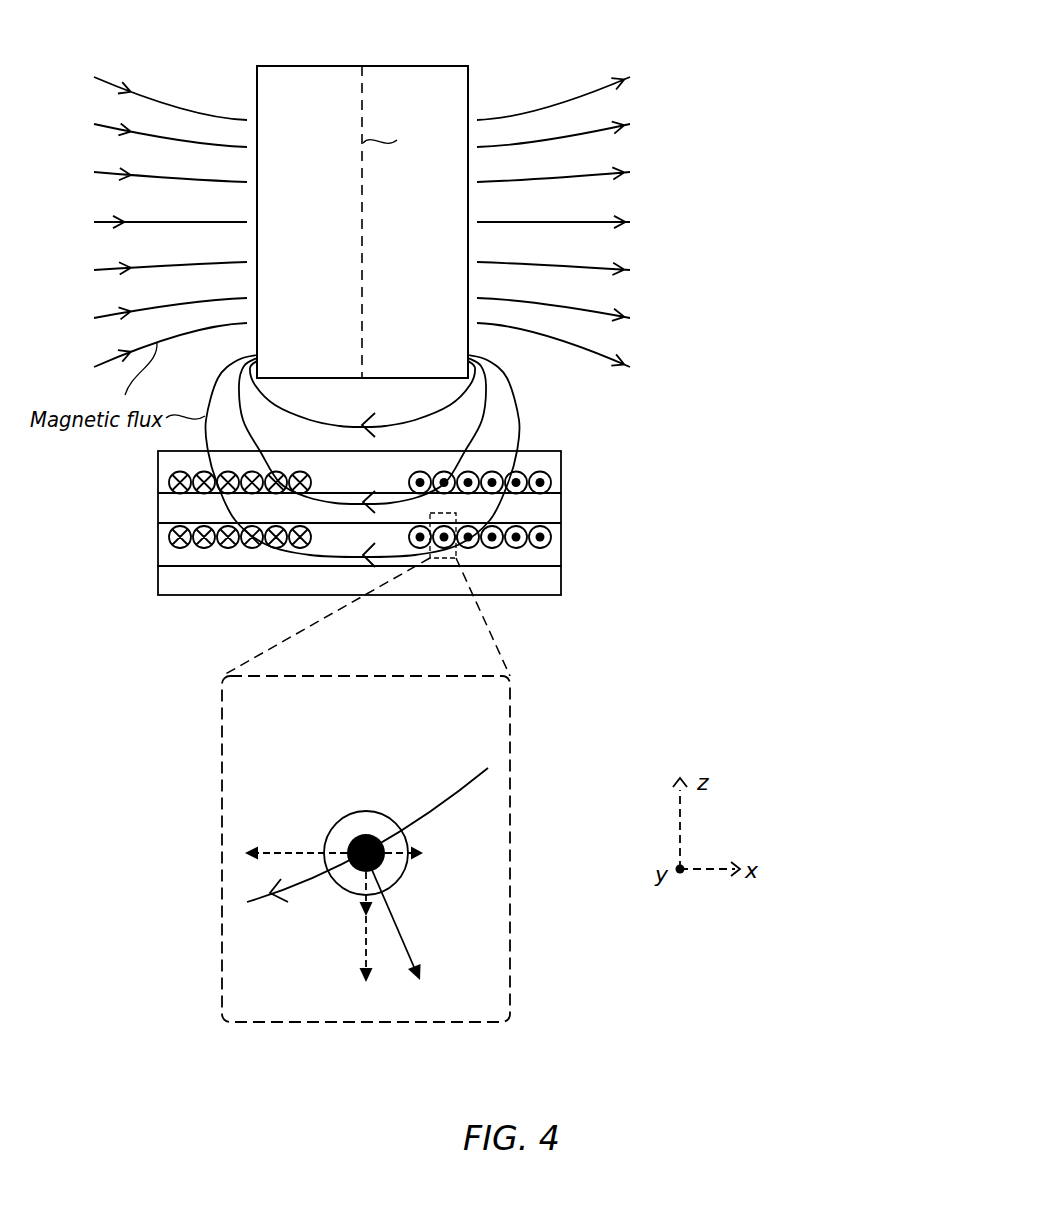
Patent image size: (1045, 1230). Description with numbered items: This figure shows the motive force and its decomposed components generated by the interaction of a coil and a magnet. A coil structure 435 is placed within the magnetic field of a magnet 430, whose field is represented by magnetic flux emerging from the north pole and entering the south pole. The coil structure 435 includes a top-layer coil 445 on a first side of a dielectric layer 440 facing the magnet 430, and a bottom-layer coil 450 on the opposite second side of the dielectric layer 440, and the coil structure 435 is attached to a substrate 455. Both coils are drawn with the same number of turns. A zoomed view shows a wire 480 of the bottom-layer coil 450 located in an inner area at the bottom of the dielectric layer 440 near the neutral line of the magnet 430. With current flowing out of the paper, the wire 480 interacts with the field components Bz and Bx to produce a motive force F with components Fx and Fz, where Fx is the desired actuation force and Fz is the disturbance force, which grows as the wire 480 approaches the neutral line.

The magnet 430 is at (336, 64).
The coil structure 435 is at (800, 558).
The dielectric layer 440 is at (551, 512).
The top-layer coil 445 is at (551, 484).
The bottom-layer coil 450 is at (551, 539).
The substrate 455 is at (551, 584).
The wire 480 is at (510, 712).